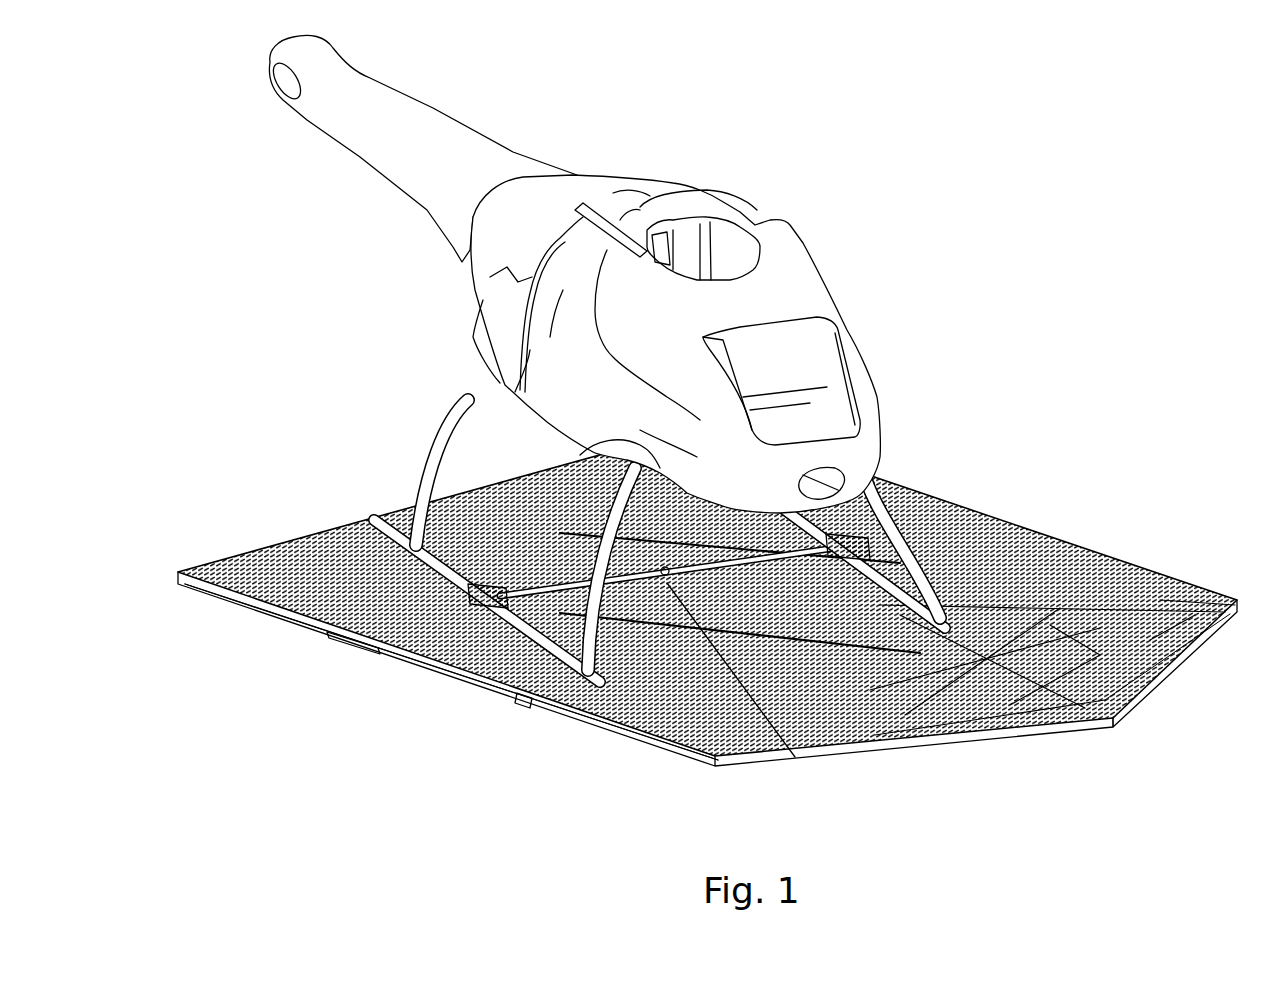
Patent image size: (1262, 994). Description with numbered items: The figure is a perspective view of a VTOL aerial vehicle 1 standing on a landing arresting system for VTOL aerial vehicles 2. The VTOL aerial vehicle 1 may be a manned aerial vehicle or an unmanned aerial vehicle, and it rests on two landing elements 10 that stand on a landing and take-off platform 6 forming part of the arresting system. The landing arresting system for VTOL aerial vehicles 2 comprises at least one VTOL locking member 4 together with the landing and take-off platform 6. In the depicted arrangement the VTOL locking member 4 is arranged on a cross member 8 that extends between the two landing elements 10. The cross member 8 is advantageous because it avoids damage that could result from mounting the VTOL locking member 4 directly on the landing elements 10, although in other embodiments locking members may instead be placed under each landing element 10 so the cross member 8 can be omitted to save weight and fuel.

The VTOL aerial vehicle 1 is at (682, 187).
The landing arresting system for VTOL aerial vehicles 2 is at (952, 470).
The VTOL locking member 4 is at (762, 562).
The landing and take-off platform 6 is at (446, 659).
The cross member 8 is at (826, 548).
The landing element 10 is at (521, 698).